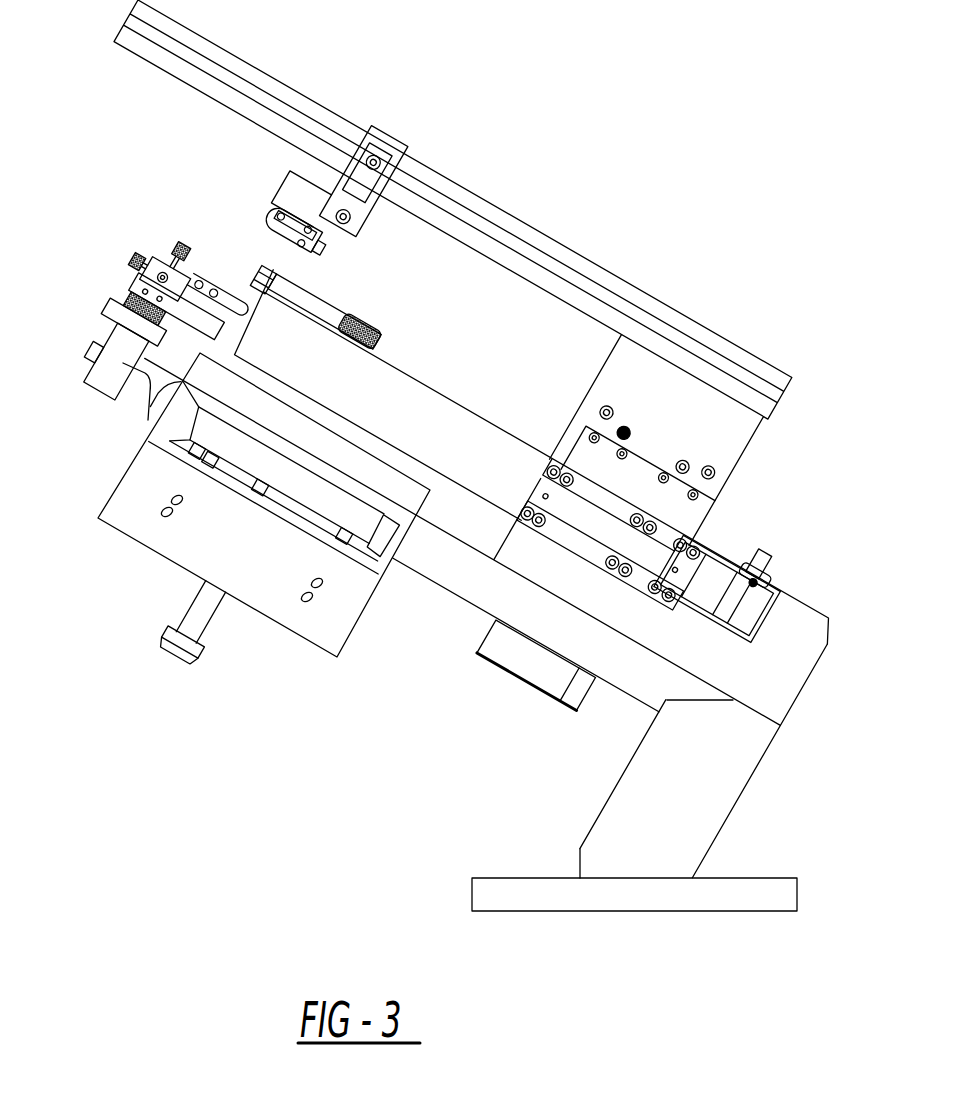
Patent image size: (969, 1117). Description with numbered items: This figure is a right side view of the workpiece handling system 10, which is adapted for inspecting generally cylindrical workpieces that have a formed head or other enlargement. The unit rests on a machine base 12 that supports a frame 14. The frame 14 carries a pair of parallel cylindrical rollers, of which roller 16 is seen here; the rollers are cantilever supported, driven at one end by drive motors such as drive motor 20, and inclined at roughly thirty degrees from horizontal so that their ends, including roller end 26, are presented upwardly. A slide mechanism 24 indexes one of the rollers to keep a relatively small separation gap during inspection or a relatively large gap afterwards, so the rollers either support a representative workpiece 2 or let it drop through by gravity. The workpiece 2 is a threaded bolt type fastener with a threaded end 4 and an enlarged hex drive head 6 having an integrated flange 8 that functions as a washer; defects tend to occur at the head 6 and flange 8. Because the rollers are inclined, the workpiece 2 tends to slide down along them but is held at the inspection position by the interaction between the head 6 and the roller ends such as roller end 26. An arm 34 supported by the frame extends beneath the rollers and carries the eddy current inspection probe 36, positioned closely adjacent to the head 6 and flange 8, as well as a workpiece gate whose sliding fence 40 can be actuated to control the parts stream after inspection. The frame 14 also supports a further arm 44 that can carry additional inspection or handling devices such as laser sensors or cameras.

The workpiece 2 is at (310, 307).
The threaded end 4 is at (363, 317).
The enlarged head 6 is at (272, 268).
The flange 8 is at (300, 273).
The workpiece handling system 10 is at (614, 208).
The machine base 12 is at (682, 910).
The frame 14 is at (722, 560).
The cylindrical roller 16 is at (487, 505).
The drive motor 20 is at (757, 615).
The slide mechanism 24 is at (660, 543).
The roller end 26 is at (247, 330).
The arm 34 is at (123, 408).
The eddy current inspection probe 36 is at (228, 287).
The sliding fence 40 is at (187, 378).
The arm 44 is at (498, 203).